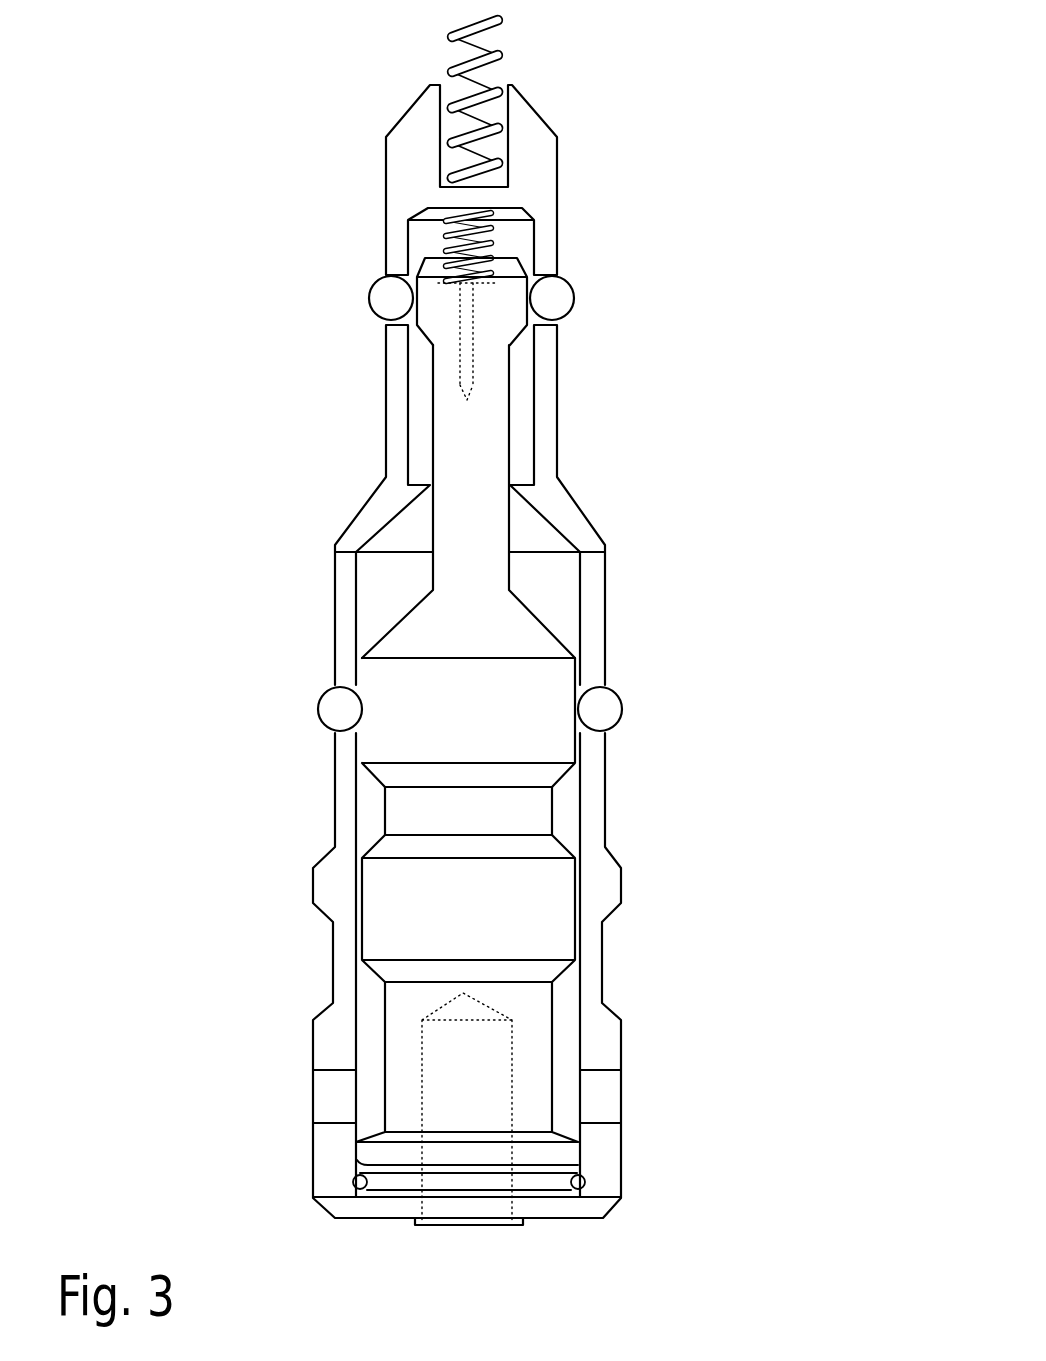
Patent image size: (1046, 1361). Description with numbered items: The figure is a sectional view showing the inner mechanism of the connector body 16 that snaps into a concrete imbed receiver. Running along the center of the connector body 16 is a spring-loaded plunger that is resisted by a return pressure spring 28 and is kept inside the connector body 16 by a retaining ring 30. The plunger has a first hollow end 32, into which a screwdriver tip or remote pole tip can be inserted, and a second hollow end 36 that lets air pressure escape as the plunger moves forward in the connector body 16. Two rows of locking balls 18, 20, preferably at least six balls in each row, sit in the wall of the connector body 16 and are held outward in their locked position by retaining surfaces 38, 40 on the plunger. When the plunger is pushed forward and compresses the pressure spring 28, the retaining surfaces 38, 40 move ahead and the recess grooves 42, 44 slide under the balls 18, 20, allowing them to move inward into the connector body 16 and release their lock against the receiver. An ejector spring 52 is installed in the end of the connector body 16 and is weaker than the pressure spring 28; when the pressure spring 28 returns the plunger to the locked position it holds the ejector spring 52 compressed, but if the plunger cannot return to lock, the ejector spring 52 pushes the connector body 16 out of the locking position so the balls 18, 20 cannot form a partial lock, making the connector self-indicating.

The connector body 16 is at (558, 212).
The first row of balls 18 is at (573, 313).
The second row of balls 20 is at (623, 707).
The return pressure spring 28 is at (492, 238).
The retaining ring 30 is at (586, 1181).
The first hollow end 32 is at (478, 1223).
The second hollow end 36 is at (475, 372).
The retaining surface 38 is at (458, 285).
The retaining surface 40 is at (420, 710).
The recess groove 42 is at (437, 570).
The recess groove 44 is at (388, 812).
The ejector spring 52 is at (502, 53).